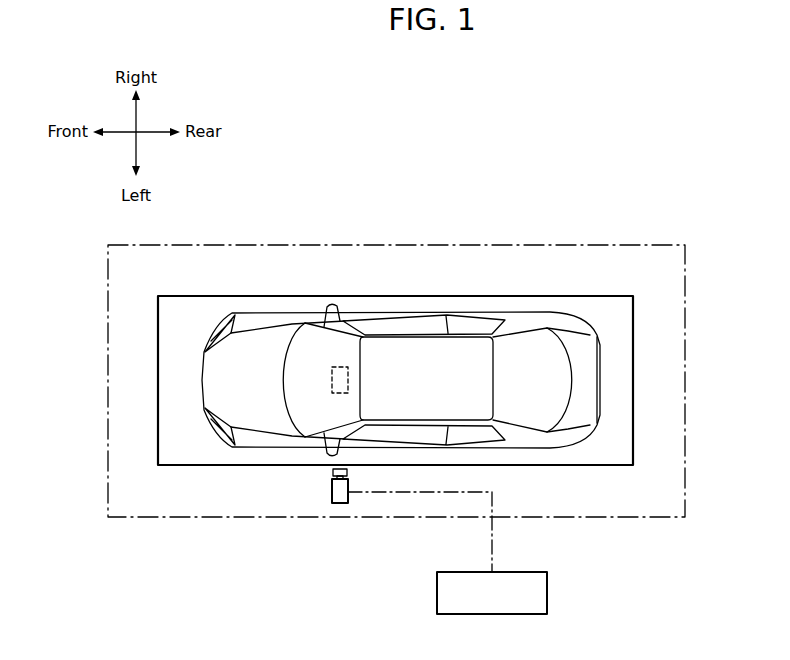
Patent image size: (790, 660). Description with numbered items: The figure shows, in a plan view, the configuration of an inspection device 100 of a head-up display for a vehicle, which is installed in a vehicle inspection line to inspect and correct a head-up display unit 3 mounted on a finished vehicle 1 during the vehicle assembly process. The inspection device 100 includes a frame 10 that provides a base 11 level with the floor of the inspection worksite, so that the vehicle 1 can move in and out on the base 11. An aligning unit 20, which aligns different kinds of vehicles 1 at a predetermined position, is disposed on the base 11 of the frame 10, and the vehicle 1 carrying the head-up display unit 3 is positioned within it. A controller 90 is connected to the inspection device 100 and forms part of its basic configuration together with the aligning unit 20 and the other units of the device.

The vehicle 1 is at (477, 312).
The head-up display unit 3 is at (331, 381).
The frame 10 is at (393, 517).
The base 11 is at (662, 387).
The aligning unit 20 is at (426, 294).
The controller 90 is at (548, 593).
The inspection device 100 is at (328, 494).